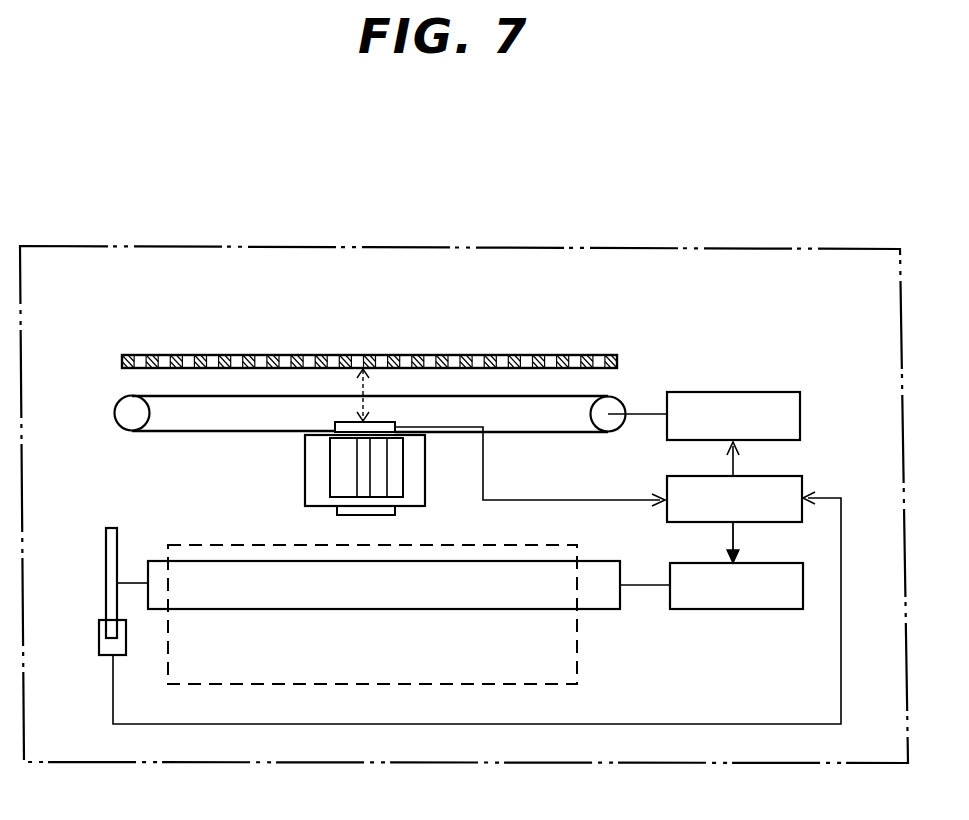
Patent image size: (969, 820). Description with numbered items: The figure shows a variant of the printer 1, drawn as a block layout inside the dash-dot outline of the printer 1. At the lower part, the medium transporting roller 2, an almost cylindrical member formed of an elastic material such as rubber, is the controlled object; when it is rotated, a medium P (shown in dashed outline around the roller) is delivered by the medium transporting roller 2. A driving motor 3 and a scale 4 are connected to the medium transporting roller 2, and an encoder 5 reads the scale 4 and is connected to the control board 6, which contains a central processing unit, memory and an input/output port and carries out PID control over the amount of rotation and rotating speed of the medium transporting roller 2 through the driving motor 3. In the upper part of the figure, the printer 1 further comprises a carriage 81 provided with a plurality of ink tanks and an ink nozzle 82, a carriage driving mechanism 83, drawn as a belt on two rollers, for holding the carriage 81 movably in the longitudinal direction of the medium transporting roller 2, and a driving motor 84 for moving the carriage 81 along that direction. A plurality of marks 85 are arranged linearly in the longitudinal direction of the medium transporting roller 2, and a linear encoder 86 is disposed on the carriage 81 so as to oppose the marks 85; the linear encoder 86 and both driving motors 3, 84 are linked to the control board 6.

The printer 1 is at (464, 478).
The medium transporting roller 2 is at (606, 611).
The driving motor 3 is at (770, 610).
The scale 4 is at (80, 583).
The encoder 5 is at (84, 640).
The control board 6 is at (802, 482).
The carriage 81 is at (425, 484).
The ink nozzle 82 is at (337, 514).
The carriage driving mechanism 83 is at (533, 434).
The driving motor 84 is at (800, 405).
The marks 85 is at (580, 354).
The linear encoder 86 is at (334, 426).
The medium P is at (578, 650).